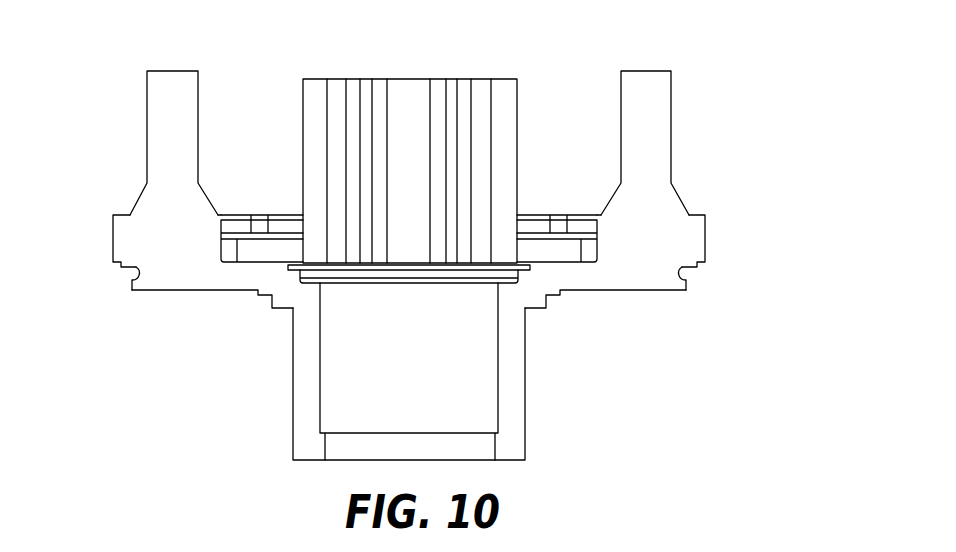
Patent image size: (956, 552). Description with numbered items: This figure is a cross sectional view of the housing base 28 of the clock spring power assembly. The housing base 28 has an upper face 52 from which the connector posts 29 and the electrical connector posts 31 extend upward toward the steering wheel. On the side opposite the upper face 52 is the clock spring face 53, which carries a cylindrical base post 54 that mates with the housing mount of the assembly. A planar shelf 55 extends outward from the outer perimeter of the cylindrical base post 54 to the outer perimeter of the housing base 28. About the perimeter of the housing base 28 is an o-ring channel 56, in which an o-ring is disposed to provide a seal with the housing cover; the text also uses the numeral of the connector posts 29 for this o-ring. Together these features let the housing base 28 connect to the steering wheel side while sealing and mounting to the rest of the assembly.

The housing base 28 is at (678, 197).
The connector posts 29 is at (147, 138).
The electrical connector posts 31 is at (517, 78).
The upper face 52 is at (263, 215).
The clock spring face 53 is at (187, 291).
The cylindrical base post 54 is at (293, 440).
The planar shelf 55 is at (633, 291).
The o-ring channel 56 is at (685, 273).